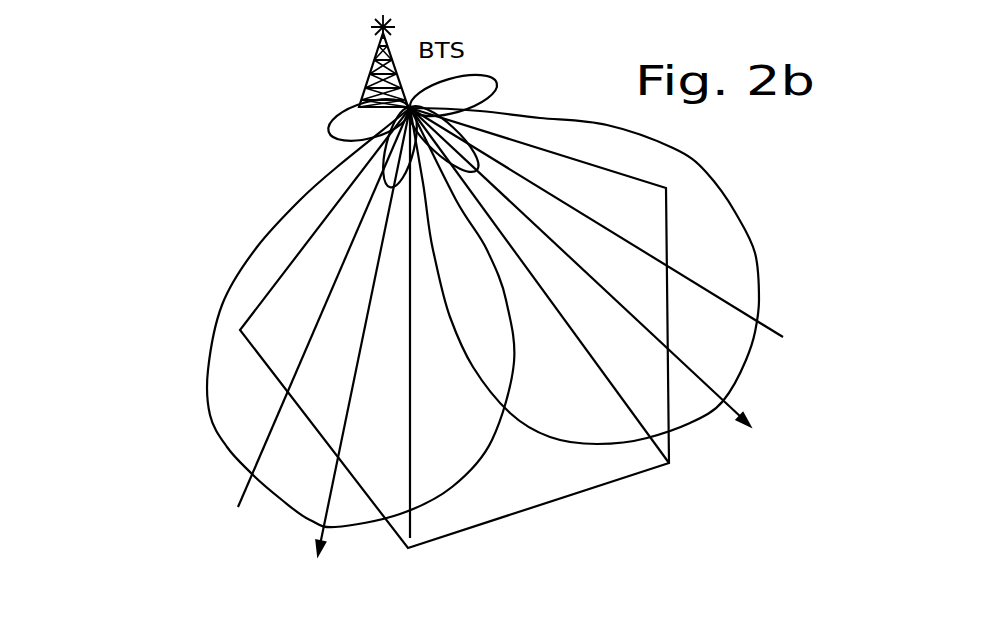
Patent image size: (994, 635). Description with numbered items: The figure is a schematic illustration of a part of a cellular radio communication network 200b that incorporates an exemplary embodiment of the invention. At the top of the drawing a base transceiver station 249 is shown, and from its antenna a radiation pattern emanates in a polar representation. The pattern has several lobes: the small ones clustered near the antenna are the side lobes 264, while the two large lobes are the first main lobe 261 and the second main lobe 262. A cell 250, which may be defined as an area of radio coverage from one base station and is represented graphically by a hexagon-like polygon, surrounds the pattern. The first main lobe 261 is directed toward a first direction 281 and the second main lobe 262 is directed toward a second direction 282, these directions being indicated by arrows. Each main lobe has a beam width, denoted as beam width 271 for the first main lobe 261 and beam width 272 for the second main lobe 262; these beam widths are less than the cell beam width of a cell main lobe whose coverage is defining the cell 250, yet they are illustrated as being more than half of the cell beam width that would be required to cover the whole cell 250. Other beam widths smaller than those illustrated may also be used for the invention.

The base transceiver station antenna 249 is at (370, 75).
The side lobes 264 is at (330, 130).
The first main lobe 261 is at (757, 268).
The second main lobe 262 is at (207, 412).
The beam width 271 is at (790, 303).
The beam width 272 is at (241, 473).
The first direction 281 is at (735, 404).
The second direction 282 is at (348, 566).
The cell 250 is at (587, 490).
The cellular radio communication network 200b is at (782, 559).